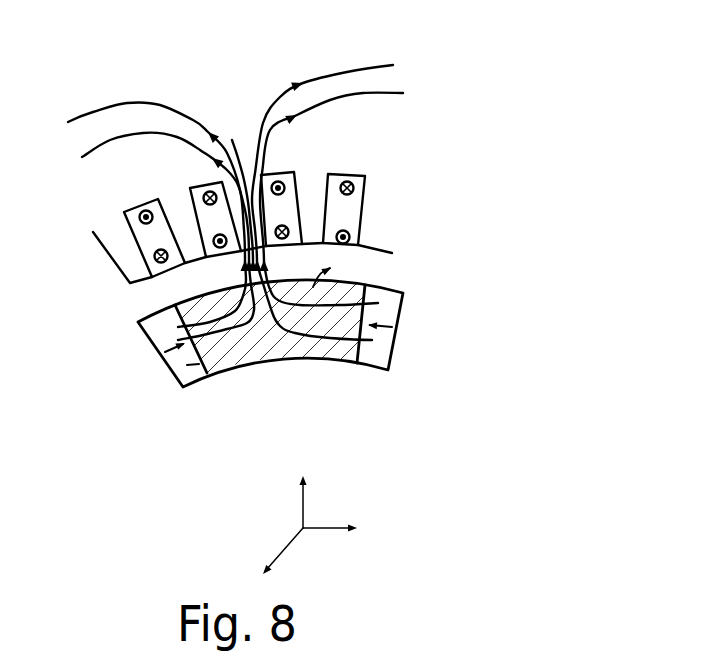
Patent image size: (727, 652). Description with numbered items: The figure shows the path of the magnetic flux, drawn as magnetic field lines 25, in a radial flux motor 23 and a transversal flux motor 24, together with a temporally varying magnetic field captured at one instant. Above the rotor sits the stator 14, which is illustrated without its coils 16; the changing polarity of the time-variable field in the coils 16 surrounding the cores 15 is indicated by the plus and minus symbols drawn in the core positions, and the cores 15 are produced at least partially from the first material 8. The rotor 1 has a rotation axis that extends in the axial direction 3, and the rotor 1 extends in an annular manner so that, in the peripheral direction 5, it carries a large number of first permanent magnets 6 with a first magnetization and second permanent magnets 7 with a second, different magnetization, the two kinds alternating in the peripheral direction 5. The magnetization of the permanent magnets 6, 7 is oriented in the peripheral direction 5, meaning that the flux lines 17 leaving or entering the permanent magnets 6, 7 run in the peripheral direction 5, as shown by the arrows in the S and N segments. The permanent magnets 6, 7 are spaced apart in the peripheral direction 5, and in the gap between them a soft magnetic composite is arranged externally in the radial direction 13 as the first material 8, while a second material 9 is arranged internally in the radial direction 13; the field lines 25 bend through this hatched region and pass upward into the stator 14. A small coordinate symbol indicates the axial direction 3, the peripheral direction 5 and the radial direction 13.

The rotor 1 is at (290, 355).
The axial direction 3 is at (275, 566).
The peripheral direction 5 is at (340, 530).
The first permanent magnet 6 is at (178, 363).
The second permanent magnet 7 is at (383, 342).
The first material 8 is at (192, 305).
The second material 9 is at (273, 345).
The radial direction 13 is at (304, 488).
The stator 14 is at (253, 214).
The core 15 is at (184, 232).
The coil 16 is at (355, 208).
The flux line 17 is at (207, 157).
The radial flux motor 23 is at (438, 57).
The transversal flux motor 24 is at (415, 172).
The magnetic field lines 25 is at (345, 97).